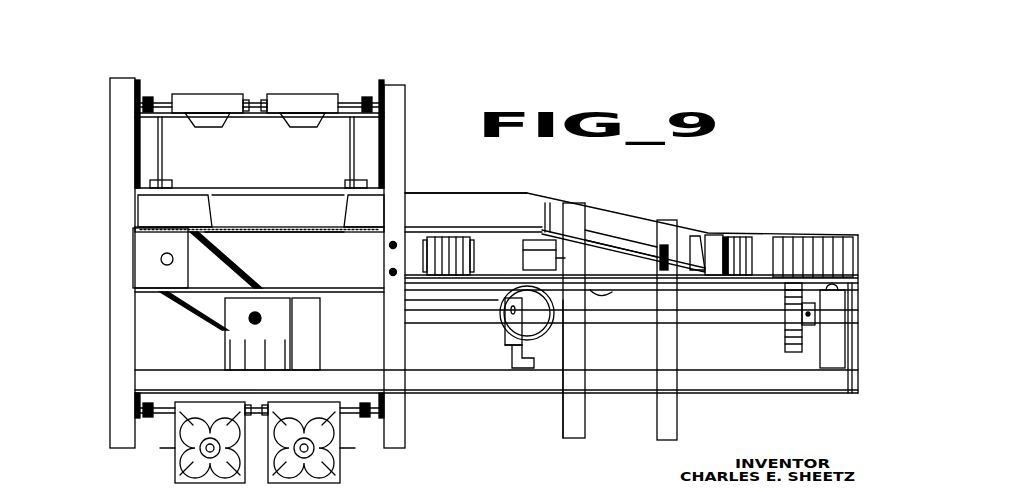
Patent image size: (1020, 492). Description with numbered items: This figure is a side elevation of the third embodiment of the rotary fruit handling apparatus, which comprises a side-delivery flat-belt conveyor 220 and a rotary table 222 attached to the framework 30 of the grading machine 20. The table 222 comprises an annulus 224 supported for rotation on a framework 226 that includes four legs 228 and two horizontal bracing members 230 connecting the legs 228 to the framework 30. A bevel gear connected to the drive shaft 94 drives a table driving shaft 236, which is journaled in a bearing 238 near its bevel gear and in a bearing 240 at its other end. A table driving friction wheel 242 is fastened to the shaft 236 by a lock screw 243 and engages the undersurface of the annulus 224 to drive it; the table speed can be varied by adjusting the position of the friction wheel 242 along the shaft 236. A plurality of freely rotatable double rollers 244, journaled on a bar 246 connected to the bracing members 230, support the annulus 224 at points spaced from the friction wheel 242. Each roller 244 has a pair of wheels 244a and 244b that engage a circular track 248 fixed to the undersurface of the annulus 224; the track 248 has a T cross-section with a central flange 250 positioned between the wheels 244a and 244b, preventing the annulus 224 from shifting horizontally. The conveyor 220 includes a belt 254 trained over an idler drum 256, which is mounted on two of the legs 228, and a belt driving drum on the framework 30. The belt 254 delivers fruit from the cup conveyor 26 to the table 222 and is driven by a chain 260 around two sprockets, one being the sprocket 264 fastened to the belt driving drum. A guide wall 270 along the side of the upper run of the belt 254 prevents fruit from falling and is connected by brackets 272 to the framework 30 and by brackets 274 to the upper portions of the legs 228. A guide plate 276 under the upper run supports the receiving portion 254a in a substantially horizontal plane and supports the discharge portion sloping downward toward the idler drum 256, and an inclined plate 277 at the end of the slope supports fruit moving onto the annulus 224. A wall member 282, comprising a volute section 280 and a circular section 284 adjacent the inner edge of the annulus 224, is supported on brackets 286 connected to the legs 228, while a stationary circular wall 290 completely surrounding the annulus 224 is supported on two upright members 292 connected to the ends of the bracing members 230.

The grading machine 20 is at (113, 72).
The cup conveyor 26 is at (232, 92).
The framework 30 is at (398, 416).
The drive shaft 94 is at (250, 321).
The side-delivery flat-belt conveyor 220 is at (485, 191).
The rotary table 222 is at (775, 238).
The annulus 224 is at (703, 280).
The framework 226 is at (560, 416).
The legs 228 is at (668, 425).
The horizontal bracing members 230 is at (485, 388).
The table driving shaft 236 is at (435, 312).
The bearing 238 is at (305, 325).
The bearing 240 is at (832, 322).
The table driving friction wheel 242 is at (792, 338).
The lock screw 243 is at (800, 316).
The double rollers 244 is at (498, 300).
The wheel 244a is at (505, 312).
The wheel 244b is at (535, 356).
The bar 246 is at (512, 354).
The circular track 248 is at (648, 292).
The central flange 250 is at (609, 299).
The belt 254 is at (250, 228).
The receiving portion 254a is at (340, 232).
The idler drum 256 is at (693, 252).
The chain 260 is at (228, 258).
The sprocket 264 is at (160, 258).
The guide wall 270 is at (182, 223).
The brackets 272 is at (182, 209).
The brackets 274 is at (645, 245).
The guide plate 276 is at (285, 232).
The inclined plate 277 is at (708, 235).
The volute section 280 is at (742, 245).
The wall member 282 is at (538, 232).
The circular section 284 is at (535, 247).
The brackets 286 is at (560, 259).
The stationary circular wall 290 is at (450, 245).
The upright members 292 is at (850, 378).